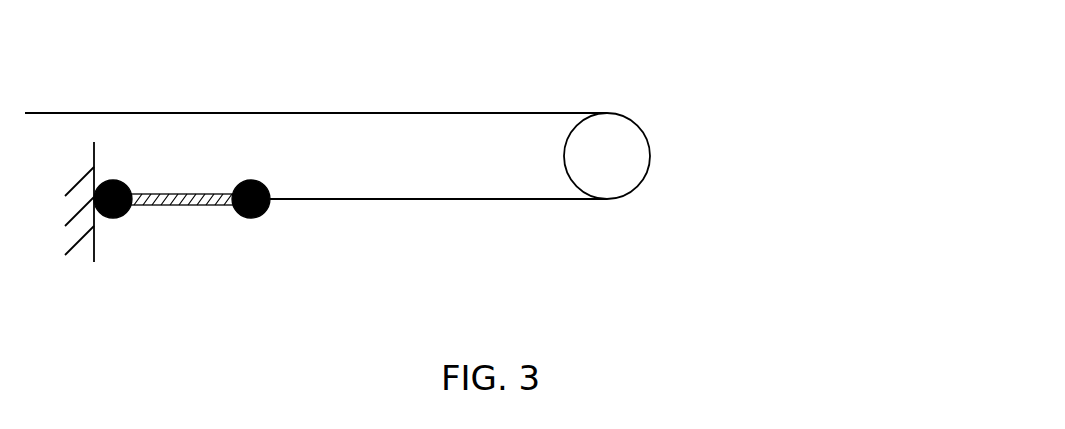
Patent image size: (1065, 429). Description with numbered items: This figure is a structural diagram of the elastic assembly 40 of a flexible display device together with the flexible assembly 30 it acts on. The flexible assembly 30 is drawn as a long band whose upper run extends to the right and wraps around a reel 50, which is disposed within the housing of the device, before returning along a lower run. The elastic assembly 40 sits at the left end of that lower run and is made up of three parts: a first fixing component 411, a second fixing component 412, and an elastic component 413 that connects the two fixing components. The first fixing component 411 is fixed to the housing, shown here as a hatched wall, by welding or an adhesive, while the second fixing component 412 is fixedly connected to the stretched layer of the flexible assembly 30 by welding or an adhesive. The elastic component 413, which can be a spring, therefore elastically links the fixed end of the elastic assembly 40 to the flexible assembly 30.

The flexible assembly 30 is at (335, 113).
The reel 50 is at (607, 155).
The elastic assembly 40 is at (514, 185).
The first fixing component 411 is at (117, 218).
The second fixing component 412 is at (253, 218).
The elastic component 413 is at (182, 205).